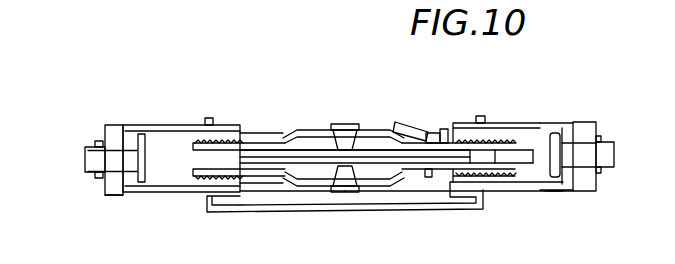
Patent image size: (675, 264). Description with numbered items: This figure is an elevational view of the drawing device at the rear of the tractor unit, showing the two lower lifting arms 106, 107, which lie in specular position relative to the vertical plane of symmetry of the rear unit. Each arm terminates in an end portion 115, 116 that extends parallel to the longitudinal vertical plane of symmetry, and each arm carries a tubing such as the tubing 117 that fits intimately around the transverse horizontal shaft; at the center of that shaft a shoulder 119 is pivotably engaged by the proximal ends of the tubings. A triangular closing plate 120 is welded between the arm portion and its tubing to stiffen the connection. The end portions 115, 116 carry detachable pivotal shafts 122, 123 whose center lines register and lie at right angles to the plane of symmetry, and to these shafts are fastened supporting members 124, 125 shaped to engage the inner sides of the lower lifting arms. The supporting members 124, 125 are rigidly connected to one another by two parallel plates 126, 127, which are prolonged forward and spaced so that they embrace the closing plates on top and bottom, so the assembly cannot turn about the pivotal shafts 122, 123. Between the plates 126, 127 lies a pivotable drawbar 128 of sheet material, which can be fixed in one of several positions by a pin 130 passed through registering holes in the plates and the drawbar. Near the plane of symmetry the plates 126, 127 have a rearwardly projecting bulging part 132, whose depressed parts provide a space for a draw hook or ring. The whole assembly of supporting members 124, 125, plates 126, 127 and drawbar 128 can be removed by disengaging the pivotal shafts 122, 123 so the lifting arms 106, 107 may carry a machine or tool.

The lower lifting arm 106 is at (148, 197).
The lower lifting arm 107 is at (576, 193).
The end portion 115 is at (110, 124).
The end portion 116 is at (605, 101).
The tubing 117 is at (263, 131).
The shoulder 119 is at (352, 124).
The triangular closing plate 120 is at (262, 162).
The pivotal shaft 122 is at (91, 152).
The pivotal shaft 123 is at (613, 148).
The supporting member 124 is at (162, 145).
The supporting member 125 is at (538, 126).
The plate 126 is at (440, 170).
The plate 127 is at (483, 139).
The drawbar 128 is at (384, 158).
The pin 130 is at (415, 123).
The bulging part 132 is at (307, 127).